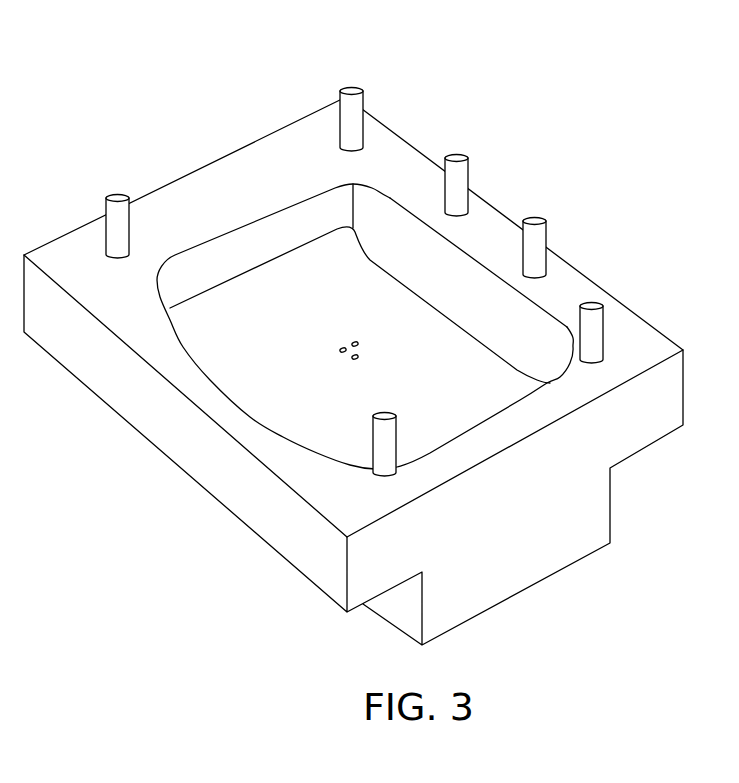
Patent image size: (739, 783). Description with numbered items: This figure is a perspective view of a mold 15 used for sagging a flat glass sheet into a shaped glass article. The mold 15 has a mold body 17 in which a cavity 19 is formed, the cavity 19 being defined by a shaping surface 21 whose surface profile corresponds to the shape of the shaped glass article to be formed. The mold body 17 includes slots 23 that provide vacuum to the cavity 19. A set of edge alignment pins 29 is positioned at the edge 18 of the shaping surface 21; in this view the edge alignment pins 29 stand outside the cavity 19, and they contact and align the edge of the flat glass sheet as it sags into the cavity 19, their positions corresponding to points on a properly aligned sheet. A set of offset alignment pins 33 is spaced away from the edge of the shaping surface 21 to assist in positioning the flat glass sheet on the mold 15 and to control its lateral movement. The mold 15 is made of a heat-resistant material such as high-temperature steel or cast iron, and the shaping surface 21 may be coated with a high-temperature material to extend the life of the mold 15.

The mold 15 is at (365, 110).
The mold body 17 is at (495, 240).
The edge of the shaping surface 18 is at (547, 302).
The cavity 19 is at (405, 233).
The shaping surface 21 is at (308, 227).
The slots 23 is at (349, 335).
The edge alignment pins 29 is at (458, 163).
The offset alignment pins 33 is at (118, 210).